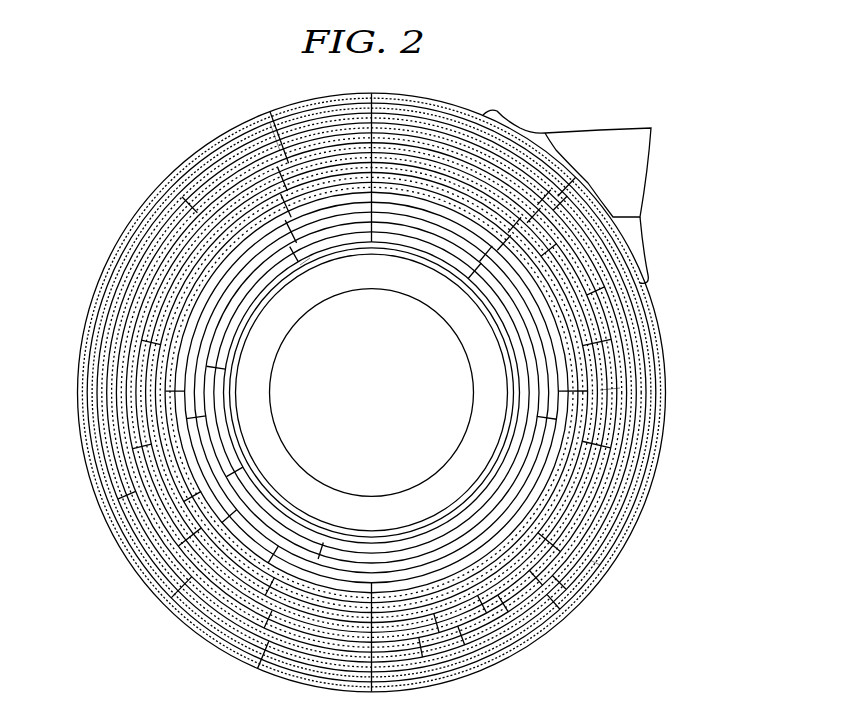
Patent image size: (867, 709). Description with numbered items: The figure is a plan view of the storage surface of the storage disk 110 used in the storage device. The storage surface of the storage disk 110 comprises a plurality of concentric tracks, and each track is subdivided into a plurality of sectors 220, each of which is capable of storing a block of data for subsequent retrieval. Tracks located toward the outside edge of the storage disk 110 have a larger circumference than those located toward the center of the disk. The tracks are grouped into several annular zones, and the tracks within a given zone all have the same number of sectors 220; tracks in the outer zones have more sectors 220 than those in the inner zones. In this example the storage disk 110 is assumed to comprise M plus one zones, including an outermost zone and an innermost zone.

The storage disk 110 is at (139, 167).
The sectors 220 is at (590, 196).